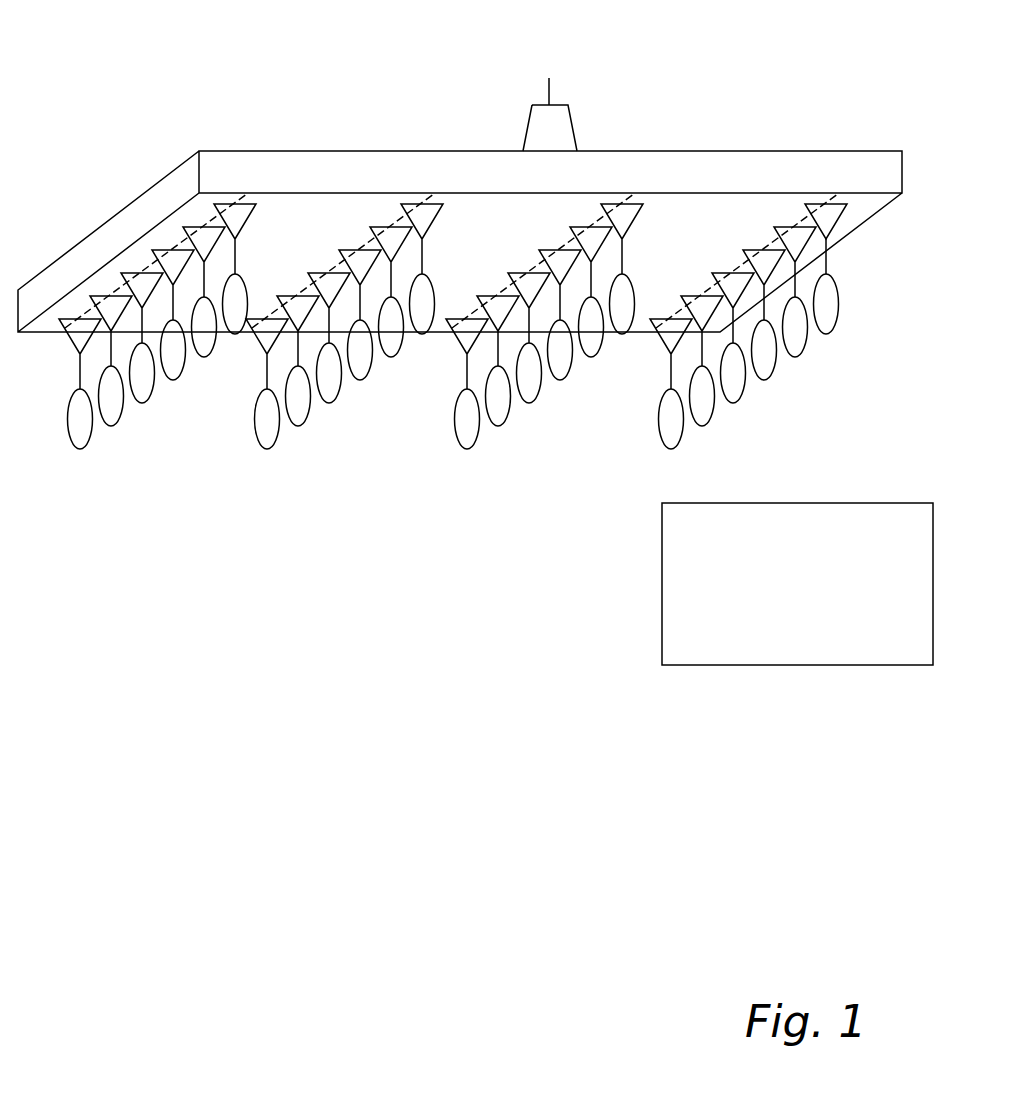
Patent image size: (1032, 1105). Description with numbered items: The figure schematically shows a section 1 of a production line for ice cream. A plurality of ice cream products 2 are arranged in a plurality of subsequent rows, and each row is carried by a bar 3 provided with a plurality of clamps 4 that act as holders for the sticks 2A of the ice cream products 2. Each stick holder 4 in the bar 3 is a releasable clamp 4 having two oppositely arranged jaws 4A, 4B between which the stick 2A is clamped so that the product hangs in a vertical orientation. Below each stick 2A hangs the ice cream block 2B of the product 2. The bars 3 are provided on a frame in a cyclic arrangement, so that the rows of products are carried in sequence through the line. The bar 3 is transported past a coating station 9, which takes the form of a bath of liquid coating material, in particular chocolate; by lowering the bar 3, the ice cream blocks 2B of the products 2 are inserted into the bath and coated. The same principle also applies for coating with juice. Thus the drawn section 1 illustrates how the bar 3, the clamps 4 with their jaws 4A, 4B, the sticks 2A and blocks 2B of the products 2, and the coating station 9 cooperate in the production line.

The section of a production line 1 is at (312, 108).
The ice cream product 2 is at (530, 390).
The stick 2A is at (828, 260).
The ice cream block 2B is at (827, 318).
The bar 3 is at (450, 183).
The clamp 4 is at (561, 279).
The jaw 4A is at (789, 279).
The jaw 4B is at (840, 240).
The coating station 9 is at (700, 578).